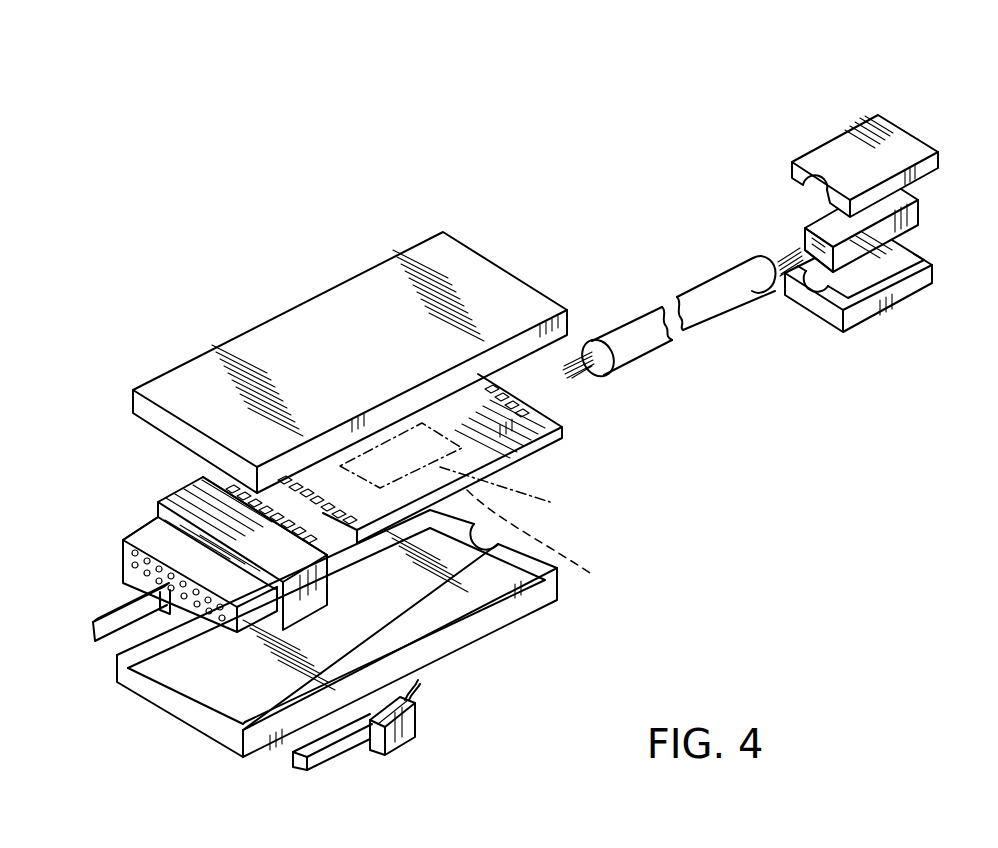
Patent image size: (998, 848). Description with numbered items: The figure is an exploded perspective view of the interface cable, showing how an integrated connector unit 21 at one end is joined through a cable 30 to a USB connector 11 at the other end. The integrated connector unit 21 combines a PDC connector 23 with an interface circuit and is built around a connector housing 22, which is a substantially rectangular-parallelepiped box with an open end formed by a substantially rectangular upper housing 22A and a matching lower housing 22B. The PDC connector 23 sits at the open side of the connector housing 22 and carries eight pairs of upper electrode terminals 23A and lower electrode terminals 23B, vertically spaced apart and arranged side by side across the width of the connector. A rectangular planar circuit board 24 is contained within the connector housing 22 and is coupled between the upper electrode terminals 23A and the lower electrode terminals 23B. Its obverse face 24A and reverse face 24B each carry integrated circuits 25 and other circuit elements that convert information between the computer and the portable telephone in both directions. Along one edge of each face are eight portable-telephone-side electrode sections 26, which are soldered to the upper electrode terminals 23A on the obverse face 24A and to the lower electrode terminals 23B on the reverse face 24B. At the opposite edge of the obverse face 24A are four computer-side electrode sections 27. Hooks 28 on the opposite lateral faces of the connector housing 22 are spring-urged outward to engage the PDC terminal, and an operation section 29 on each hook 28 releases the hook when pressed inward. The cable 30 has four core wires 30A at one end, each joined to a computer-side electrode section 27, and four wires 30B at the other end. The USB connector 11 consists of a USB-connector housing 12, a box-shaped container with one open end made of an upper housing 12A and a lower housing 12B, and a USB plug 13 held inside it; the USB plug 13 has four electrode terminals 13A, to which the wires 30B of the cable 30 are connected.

The USB connector 11 is at (858, 120).
The USB-connector housing 12 is at (810, 160).
The upper housing 12A is at (902, 142).
The lower housing 12B is at (908, 290).
The USB plug 13 is at (913, 213).
The electrode terminals 13A is at (808, 240).
The integrated connector unit 21 is at (287, 302).
The connector housing 22 is at (500, 282).
The upper housing 22A is at (360, 283).
The lower housing 22B is at (472, 628).
The PDC connector 23 is at (150, 528).
The upper electrode terminals 23A is at (233, 488).
The lower electrode terminals 23B is at (140, 590).
The circuit board 24 is at (505, 455).
The obverse face 24A is at (462, 455).
The reverse face 24B is at (541, 549).
The integrated circuits 25 is at (504, 498).
The portable-telephone-side electrode sections 26 is at (298, 478).
The computer-side electrode sections 27 is at (518, 394).
The hooks 28 is at (97, 620).
The operation sections 29 is at (398, 736).
The cable 30 is at (715, 285).
The core wires 30A is at (578, 357).
The wires 30B is at (785, 262).